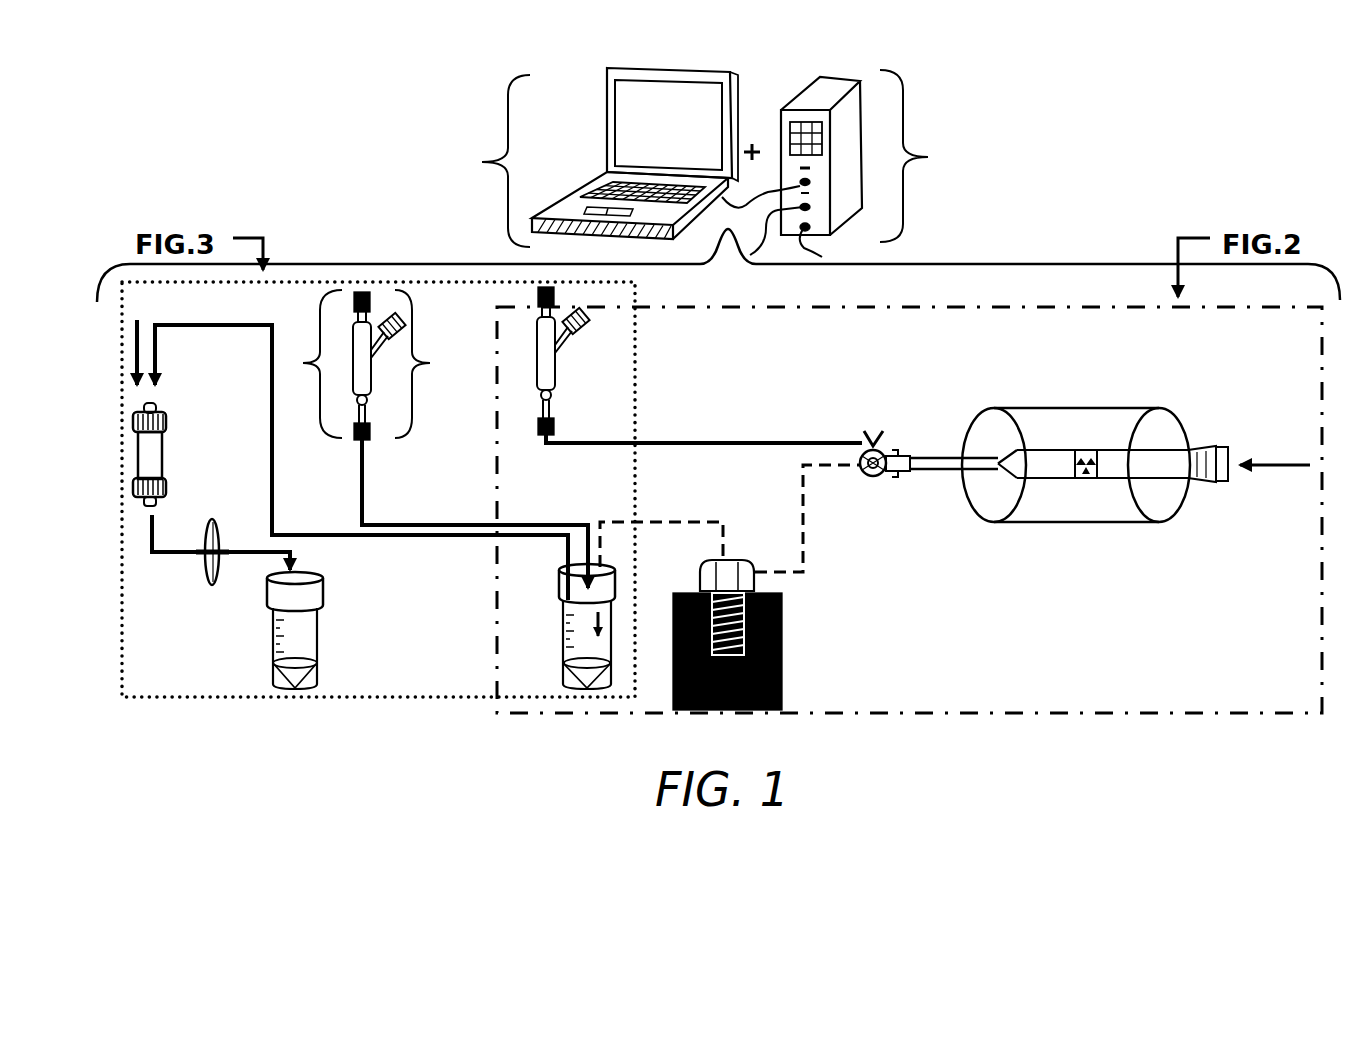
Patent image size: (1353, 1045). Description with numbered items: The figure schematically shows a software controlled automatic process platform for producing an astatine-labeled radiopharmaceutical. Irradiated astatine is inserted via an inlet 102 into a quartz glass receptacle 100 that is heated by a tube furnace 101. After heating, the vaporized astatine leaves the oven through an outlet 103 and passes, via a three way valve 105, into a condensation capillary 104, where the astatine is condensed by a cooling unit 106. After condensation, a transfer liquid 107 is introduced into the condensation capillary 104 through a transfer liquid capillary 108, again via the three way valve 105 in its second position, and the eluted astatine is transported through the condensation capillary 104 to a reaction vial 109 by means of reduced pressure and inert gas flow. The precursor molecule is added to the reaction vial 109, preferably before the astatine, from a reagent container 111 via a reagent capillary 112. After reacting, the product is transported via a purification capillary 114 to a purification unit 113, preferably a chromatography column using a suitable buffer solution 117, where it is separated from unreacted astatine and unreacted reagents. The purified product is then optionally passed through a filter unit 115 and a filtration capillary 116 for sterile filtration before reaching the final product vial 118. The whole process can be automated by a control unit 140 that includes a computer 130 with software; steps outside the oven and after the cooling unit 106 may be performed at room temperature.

The quartz glass receptacle 100 is at (1083, 479).
The tube furnace 101 is at (1076, 449).
The inlet 102 is at (1249, 444).
The outlet 103 is at (946, 491).
The condensation capillary 104 is at (730, 518).
The three way valve 105 is at (895, 445).
The cooling unit 106 is at (727, 635).
The transfer liquid 107 is at (573, 361).
The transfer liquid capillary 108 is at (714, 427).
The reaction vial 109 is at (561, 626).
The reagent container 111 is at (391, 361).
The reagent capillary 112 is at (480, 538).
The purification unit 113 is at (178, 454).
The purification capillary 114 is at (361, 462).
The filter unit 115 is at (242, 574).
The filtration capillary 116 is at (171, 552).
The buffer solution 117 is at (151, 337).
The final product vial 118 is at (323, 630).
The computer 130 is at (635, 153).
The control unit 140 is at (676, 163).